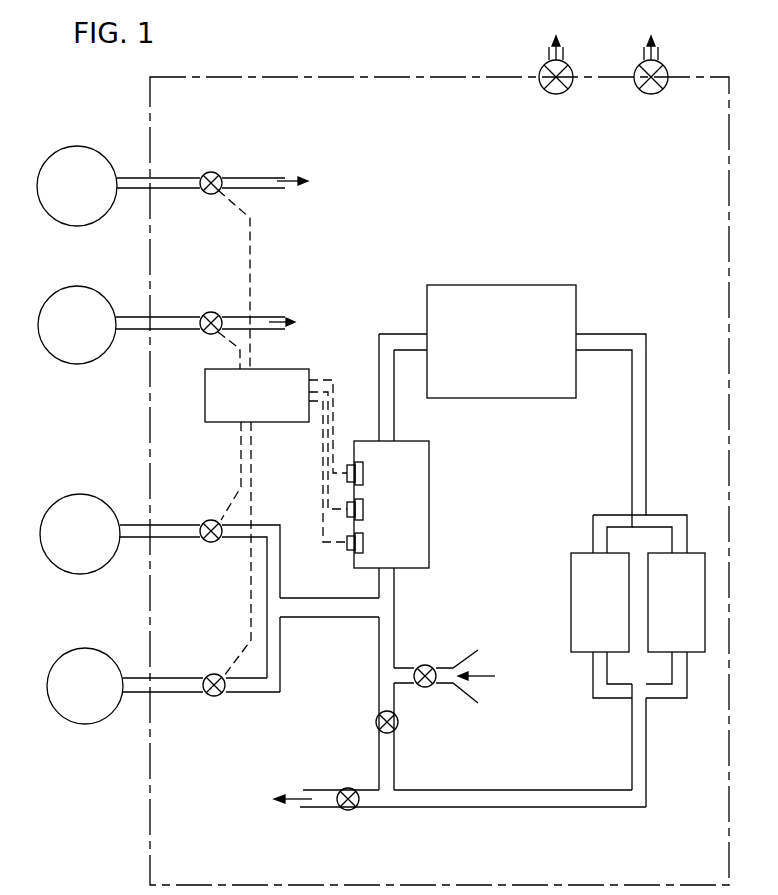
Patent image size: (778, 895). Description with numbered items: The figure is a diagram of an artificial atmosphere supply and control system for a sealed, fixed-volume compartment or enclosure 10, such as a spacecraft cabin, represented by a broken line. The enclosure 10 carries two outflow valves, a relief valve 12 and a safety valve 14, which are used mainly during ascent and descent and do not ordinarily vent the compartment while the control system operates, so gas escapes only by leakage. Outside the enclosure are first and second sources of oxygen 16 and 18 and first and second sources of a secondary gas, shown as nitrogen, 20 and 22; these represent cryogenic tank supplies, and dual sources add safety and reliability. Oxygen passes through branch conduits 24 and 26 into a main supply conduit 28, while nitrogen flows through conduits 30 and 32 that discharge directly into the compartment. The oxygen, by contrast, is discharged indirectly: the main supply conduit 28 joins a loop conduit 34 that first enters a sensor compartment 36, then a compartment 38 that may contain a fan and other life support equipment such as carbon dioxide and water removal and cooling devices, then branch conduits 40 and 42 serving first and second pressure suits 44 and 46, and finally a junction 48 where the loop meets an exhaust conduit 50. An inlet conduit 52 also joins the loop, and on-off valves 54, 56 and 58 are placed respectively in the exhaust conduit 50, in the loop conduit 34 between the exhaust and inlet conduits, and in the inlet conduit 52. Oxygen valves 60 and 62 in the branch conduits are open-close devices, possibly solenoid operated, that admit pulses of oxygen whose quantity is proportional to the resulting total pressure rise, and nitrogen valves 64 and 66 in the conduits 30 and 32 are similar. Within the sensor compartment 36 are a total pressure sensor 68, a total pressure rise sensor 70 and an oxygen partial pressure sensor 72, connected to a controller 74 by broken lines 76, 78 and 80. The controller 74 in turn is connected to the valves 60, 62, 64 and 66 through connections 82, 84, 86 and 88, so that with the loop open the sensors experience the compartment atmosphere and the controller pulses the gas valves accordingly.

The compartment or enclosure 10 is at (270, 77).
The relief valve 12 is at (568, 66).
The safety valve 14 is at (663, 66).
The first source of oxygen 16 is at (53, 715).
The second source of oxygen 18 is at (47, 572).
The first source of secondary gas 20 is at (42, 360).
The second source of secondary gas 22 is at (42, 208).
The branch conduit 24 is at (194, 693).
The branch conduit 26 is at (162, 526).
The main supply conduit 28 is at (298, 597).
The first nitrogen conduit 30 is at (262, 316).
The second nitrogen conduit 32 is at (270, 189).
The loop conduit 34 is at (398, 648).
The sensor compartment 36 is at (421, 441).
The compartment containing fan and other life support equipment 38 is at (497, 285).
The branch conduit 40 is at (591, 547).
The branch conduit 42 is at (671, 512).
The first pressure suit 44 is at (571, 648).
The second pressure suit 46 is at (705, 624).
The junction 48 is at (406, 790).
The exhaust conduit 50 is at (320, 790).
The inlet conduit 52 is at (472, 703).
The valve 54 is at (347, 788).
The valve 56 is at (398, 731).
The valve 58 is at (434, 664).
The oxygen valve 60 is at (217, 697).
The oxygen valve 62 is at (217, 542).
The first nitrogen valve 64 is at (219, 313).
The second nitrogen valve 66 is at (206, 194).
The total pressure sensor 68 is at (378, 469).
The total pressure rise sensor 70 is at (378, 505).
The oxygen partial pressure sensor 72 is at (378, 540).
The controller 74 is at (268, 369).
The broken line 76 is at (336, 444).
The broken line 78 is at (336, 412).
The sensor signal line 80 is at (339, 383).
The connection 82 is at (262, 540).
The connection 84 is at (256, 486).
The connection 86 is at (239, 356).
The connection 88 is at (251, 264).